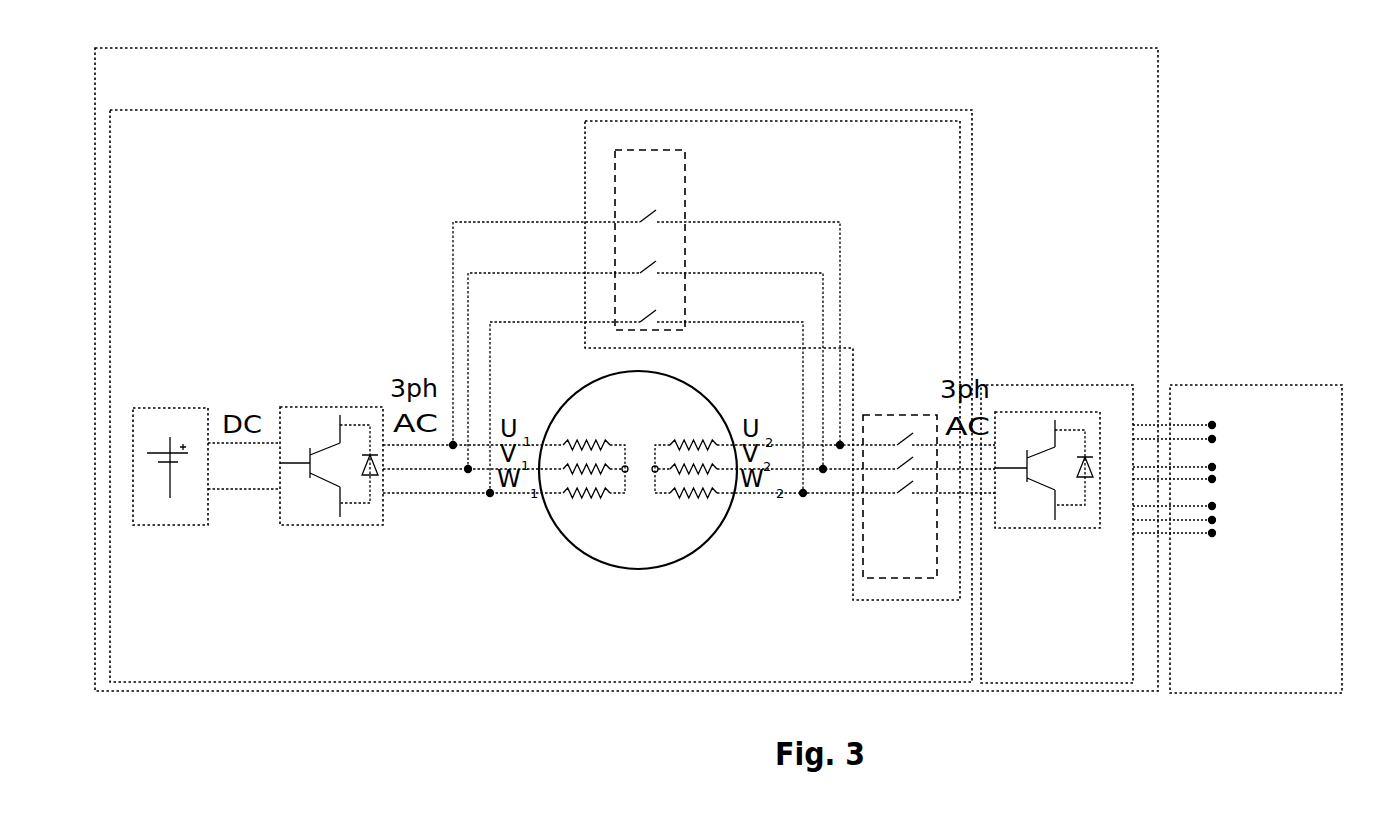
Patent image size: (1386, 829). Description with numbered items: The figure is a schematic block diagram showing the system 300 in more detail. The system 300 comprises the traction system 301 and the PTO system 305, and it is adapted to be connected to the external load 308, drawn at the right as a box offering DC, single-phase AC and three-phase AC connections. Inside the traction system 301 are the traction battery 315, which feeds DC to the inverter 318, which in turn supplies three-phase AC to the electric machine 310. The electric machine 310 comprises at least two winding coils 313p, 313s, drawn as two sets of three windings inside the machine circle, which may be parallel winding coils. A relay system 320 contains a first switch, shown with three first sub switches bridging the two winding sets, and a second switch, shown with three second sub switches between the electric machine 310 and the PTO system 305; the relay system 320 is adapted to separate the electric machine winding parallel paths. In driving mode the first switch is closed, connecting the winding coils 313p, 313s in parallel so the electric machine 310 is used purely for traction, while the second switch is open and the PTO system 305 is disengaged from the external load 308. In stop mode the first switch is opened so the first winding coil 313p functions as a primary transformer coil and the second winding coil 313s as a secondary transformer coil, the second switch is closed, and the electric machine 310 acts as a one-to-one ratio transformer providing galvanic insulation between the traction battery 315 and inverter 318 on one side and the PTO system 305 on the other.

The system 300 is at (626, 369).
The traction system 301 is at (538, 396).
The PTO system 305 is at (1057, 534).
The external load 308 is at (1237, 539).
The electric machine 310 is at (638, 470).
The first winding coil 313p is at (588, 500).
The second winding coil 313s is at (684, 498).
The traction battery 315 is at (170, 520).
The inverter 318 is at (331, 500).
The relay system 320 is at (724, 360).